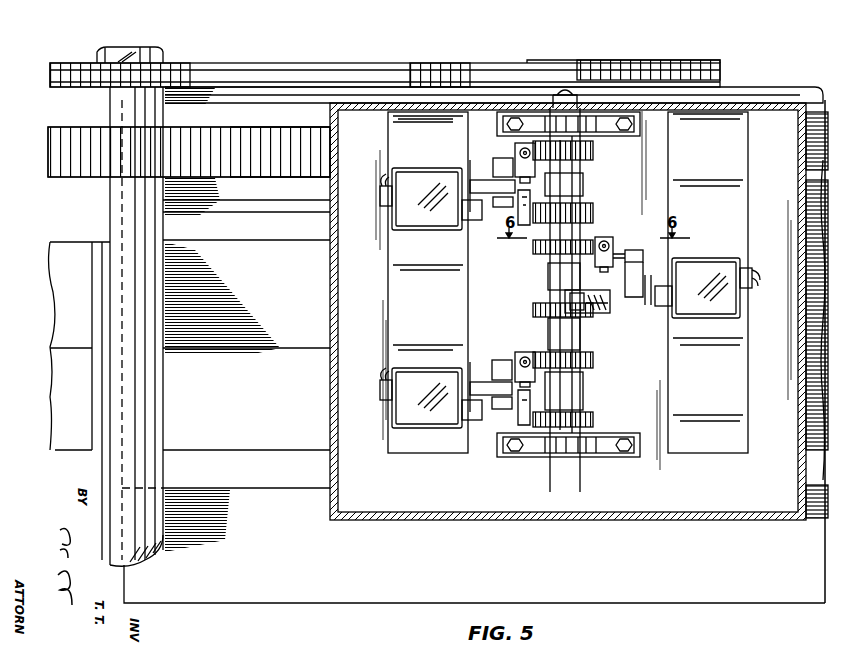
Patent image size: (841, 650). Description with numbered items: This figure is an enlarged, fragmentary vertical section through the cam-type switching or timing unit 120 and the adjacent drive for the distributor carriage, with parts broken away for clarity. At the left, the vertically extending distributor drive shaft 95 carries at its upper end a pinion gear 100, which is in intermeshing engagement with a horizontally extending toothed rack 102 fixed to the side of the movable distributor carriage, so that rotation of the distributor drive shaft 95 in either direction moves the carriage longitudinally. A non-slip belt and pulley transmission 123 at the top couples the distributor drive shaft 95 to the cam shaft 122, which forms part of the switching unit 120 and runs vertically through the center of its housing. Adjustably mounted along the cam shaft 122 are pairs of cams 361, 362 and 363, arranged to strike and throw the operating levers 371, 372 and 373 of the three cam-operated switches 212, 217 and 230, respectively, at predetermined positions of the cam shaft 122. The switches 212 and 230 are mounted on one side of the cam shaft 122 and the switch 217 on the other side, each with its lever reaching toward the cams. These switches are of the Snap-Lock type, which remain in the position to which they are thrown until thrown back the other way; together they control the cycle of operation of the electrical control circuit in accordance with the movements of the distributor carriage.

The non-slip belt and pulley transmission 123 is at (395, 44).
The pinion gear 100 is at (80, 135).
The toothed rack 102 is at (282, 135).
The distributor drive shaft 95 is at (92, 222).
The switching unit 120 is at (657, 160).
The cam shaft 122 is at (583, 138).
The cam-operated switch 230 is at (444, 168).
The operating lever 373 is at (482, 183).
The cams 363 is at (578, 199).
The cams 362 is at (550, 286).
The operating lever 372 is at (614, 306).
The cams 361 is at (578, 400).
The operating lever 371 is at (477, 383).
The cam-operated switch 217 is at (722, 244).
The cam-operated switch 212 is at (452, 430).